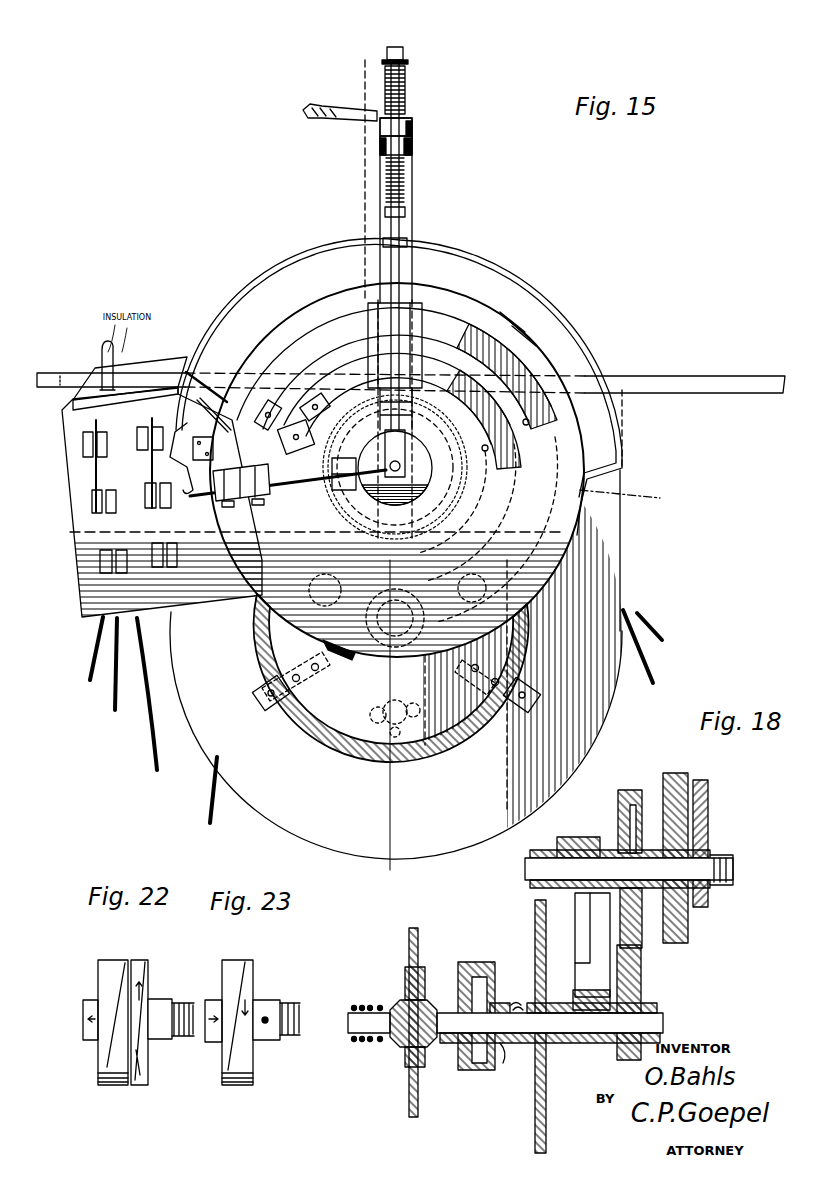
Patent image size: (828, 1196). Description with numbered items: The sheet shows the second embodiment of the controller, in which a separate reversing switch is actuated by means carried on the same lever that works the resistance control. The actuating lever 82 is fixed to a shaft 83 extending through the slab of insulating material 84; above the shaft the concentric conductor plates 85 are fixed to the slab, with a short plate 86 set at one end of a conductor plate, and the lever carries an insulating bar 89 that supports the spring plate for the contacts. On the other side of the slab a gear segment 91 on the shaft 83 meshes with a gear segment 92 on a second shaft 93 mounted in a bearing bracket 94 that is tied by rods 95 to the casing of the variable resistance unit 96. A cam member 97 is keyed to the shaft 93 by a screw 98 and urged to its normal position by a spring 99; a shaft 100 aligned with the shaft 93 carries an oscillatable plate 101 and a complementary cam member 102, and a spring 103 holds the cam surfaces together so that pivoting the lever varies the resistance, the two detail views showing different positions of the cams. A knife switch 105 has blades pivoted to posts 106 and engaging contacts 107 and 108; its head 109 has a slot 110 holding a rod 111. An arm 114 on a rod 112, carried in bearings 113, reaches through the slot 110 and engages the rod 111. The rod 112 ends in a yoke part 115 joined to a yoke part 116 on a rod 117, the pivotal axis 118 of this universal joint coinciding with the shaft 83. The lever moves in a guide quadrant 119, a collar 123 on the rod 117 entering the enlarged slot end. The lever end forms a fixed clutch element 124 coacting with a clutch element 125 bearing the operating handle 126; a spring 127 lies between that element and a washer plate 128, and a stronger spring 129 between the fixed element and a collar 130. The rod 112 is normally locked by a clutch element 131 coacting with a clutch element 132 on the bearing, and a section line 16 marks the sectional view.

In FIG. 15, the section line 16 is at (364, 524).
In FIG. 15, the actuating lever 82 is at (402, 203).
In FIG. 15, the shaft 83 is at (420, 452).
In FIG. 15, the slab of insulating material 84 is at (510, 322).
In FIG. 18, the slab of insulating material 84 is at (690, 805).
In FIG. 15, the concentric conductor plates 85 is at (432, 336).
In FIG. 15, the short plate 86 is at (282, 447).
In FIG. 15, the insulating bar 89 is at (368, 312).
In FIG. 15, the gear segment 91 is at (505, 488).
In FIG. 18, the gear segment 91 is at (618, 808).
In FIG. 15, the gear segment 92 is at (318, 645).
In FIG. 18, the gear segment 92 is at (645, 972).
In FIG. 15, the second shaft 93 is at (340, 660).
In FIG. 18, the second shaft 93 is at (650, 1018).
In FIG. 22, the second shaft 93 is at (190, 1010).
In FIG. 23, the second shaft 93 is at (292, 1010).
In FIG. 15, the bearing bracket 94 is at (372, 752).
In FIG. 18, the bearing bracket 94 is at (534, 912).
In FIG. 15, the rods 95 is at (256, 702).
In FIG. 15, the variable resistance unit 96 is at (305, 832).
In FIG. 18, the cam member 97 is at (500, 1002).
In FIG. 23, the cam member 97 is at (250, 1000).
In FIG. 18, the screw 98 is at (514, 1002).
In FIG. 18, the spring 99 is at (520, 1045).
In FIG. 22, the spring 99 is at (185, 1036).
In FIG. 23, the spring 99 is at (292, 1002).
In FIG. 18, the shaft 100 is at (360, 1040).
In FIG. 18, the plate 101 is at (418, 935).
In FIG. 18, the complementary cam member 102 is at (458, 963).
In FIG. 22, the complementary cam member 102 is at (100, 962).
In FIG. 23, the complementary cam member 102 is at (222, 968).
In FIG. 18, the spring 103 is at (392, 1010).
In FIG. 15, the knife switch 105 is at (92, 500).
In FIG. 15, the spaced posts 106 is at (100, 558).
In FIG. 15, the circuit closing contact 107 is at (160, 580).
In FIG. 15, the circuit closing contact 108 is at (82, 455).
In FIG. 15, the head of the movable switch part 109 is at (122, 392).
In FIG. 15, the slot or opening 110 is at (205, 374).
In FIG. 15, the longitudinally disposed rod 111 is at (190, 378).
In FIG. 15, the rod 112 is at (290, 487).
In FIG. 15, the spaced bearings 113 is at (255, 405).
In FIG. 15, the arm 114 is at (200, 446).
In FIG. 15, the yoke part 115 is at (345, 457).
In FIG. 15, the yoke part 116 is at (405, 450).
In FIG. 15, the rod 117 is at (410, 262).
In FIG. 15, the pivotal axis 118 is at (432, 455).
In FIG. 15, the guide quadrant 119 is at (572, 338).
In FIG. 15, the collar 123 is at (408, 243).
In FIG. 15, the fixed clutch element 124 is at (413, 148).
In FIG. 15, the complementary clutch element 125 is at (413, 128).
In FIG. 15, the operating handle 126 is at (336, 110).
In FIG. 15, the spring 127 is at (407, 90).
In FIG. 15, the washer plate 128 is at (405, 55).
In FIG. 15, the second relatively stronger spring 129 is at (406, 185).
In FIG. 15, the collar 130 is at (384, 213).
In FIG. 15, the clutch element 131 is at (252, 505).
In FIG. 15, the complementary clutch element 132 is at (216, 452).